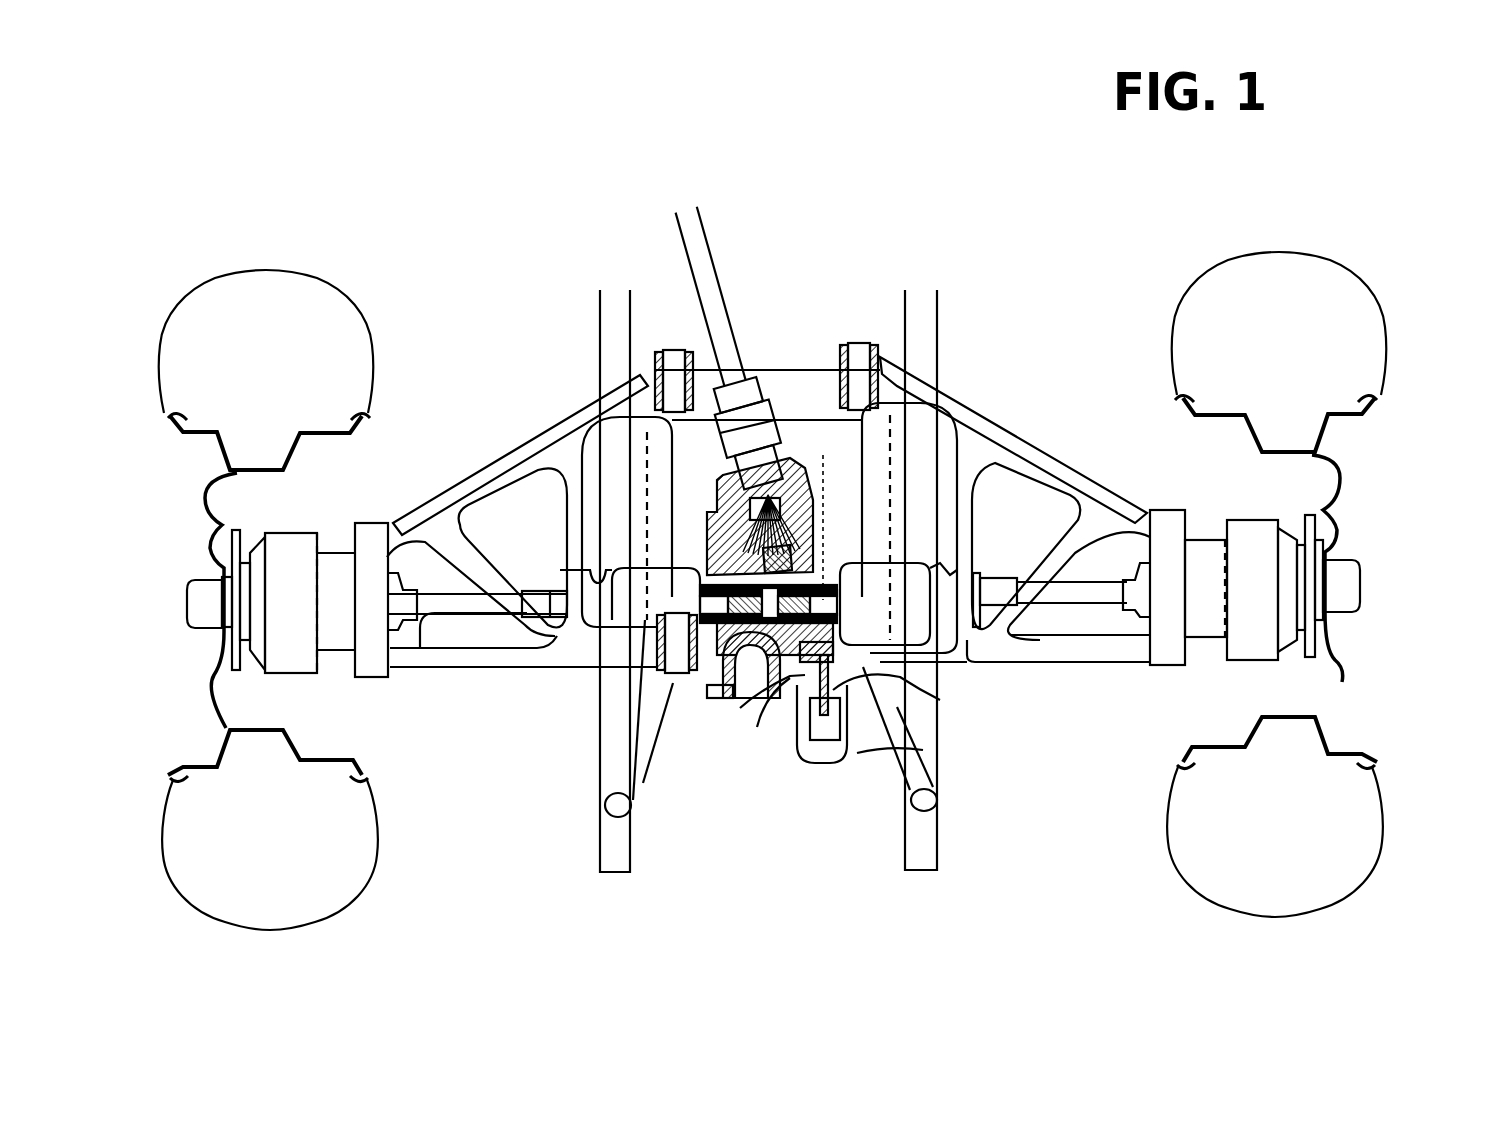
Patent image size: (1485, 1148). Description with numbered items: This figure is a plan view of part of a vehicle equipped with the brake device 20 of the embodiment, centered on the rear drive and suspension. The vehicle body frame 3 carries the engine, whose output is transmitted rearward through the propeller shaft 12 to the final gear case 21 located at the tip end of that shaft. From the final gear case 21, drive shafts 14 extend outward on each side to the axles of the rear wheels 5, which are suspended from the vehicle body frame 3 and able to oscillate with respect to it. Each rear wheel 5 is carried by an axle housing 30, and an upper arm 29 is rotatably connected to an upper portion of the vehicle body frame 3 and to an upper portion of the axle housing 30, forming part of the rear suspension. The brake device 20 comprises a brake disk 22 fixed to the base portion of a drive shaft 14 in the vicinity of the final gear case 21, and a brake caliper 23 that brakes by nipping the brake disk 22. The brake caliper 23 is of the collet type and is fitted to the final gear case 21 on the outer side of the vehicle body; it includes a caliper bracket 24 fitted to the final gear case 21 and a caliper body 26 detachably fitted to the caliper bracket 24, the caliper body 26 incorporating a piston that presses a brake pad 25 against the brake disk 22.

The vehicle body frame 3 is at (925, 340).
The rear wheels 5 is at (283, 270).
The propeller shaft 12 is at (707, 250).
The drive shaft 14 is at (420, 617).
The brake device 20 is at (800, 770).
The final gear case 21 is at (725, 703).
The brake disk 22 is at (823, 490).
The brake caliper 23 is at (858, 737).
The caliper bracket 24 is at (767, 723).
The brake pad 25 is at (915, 683).
The caliper body 26 is at (943, 760).
The upper arm 29 is at (553, 430).
The axle housing 30 is at (178, 575).